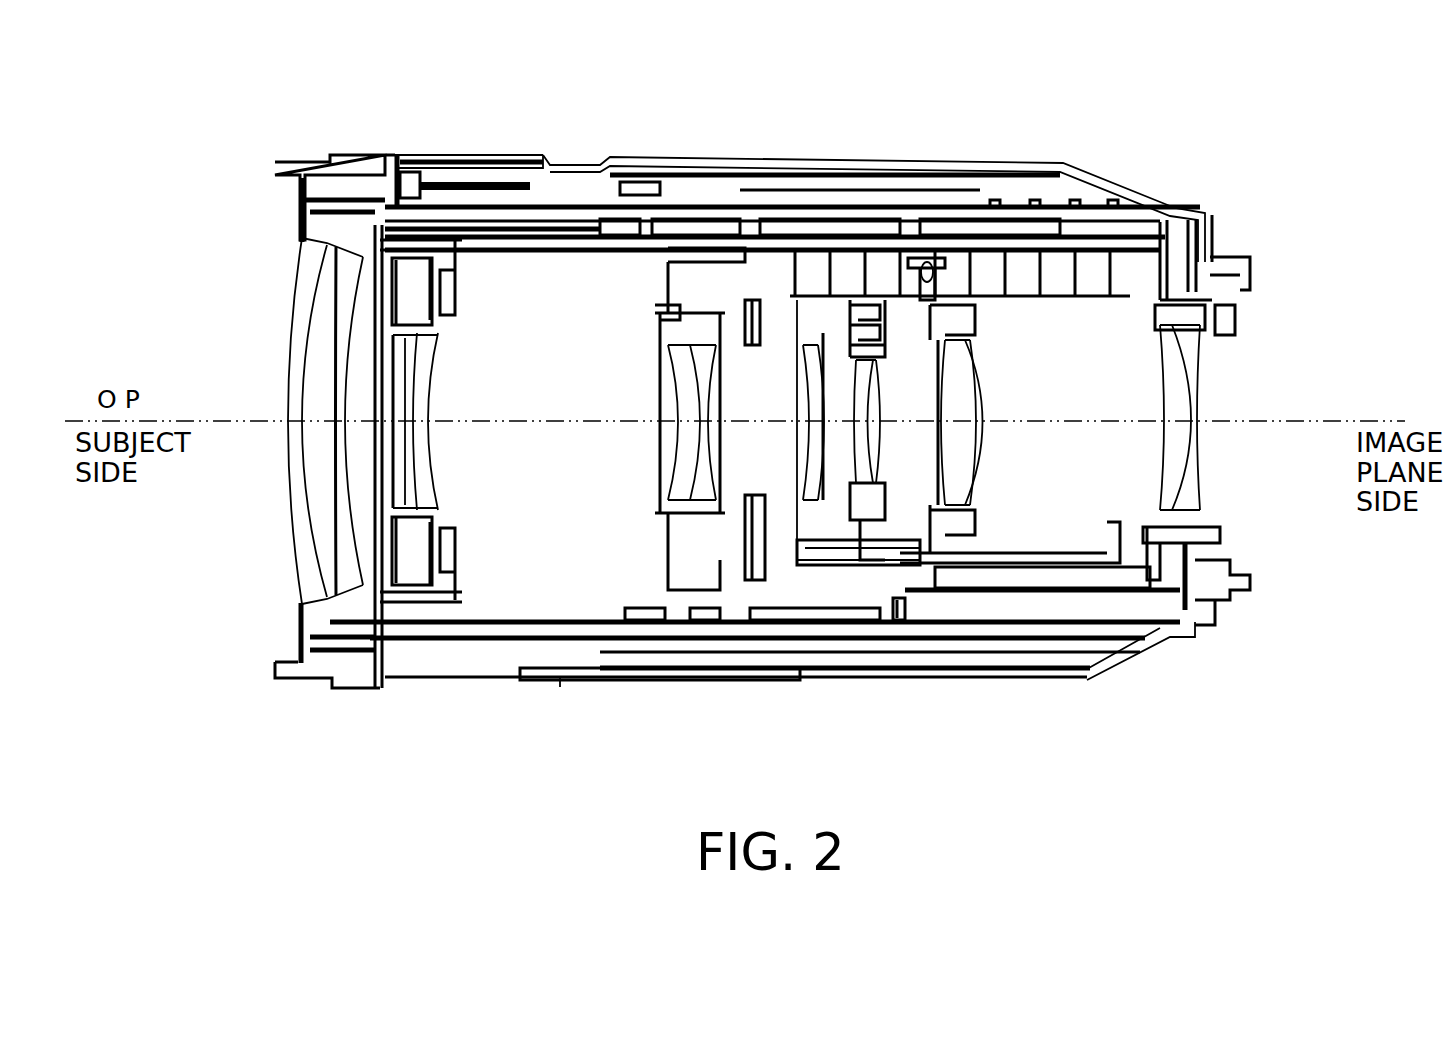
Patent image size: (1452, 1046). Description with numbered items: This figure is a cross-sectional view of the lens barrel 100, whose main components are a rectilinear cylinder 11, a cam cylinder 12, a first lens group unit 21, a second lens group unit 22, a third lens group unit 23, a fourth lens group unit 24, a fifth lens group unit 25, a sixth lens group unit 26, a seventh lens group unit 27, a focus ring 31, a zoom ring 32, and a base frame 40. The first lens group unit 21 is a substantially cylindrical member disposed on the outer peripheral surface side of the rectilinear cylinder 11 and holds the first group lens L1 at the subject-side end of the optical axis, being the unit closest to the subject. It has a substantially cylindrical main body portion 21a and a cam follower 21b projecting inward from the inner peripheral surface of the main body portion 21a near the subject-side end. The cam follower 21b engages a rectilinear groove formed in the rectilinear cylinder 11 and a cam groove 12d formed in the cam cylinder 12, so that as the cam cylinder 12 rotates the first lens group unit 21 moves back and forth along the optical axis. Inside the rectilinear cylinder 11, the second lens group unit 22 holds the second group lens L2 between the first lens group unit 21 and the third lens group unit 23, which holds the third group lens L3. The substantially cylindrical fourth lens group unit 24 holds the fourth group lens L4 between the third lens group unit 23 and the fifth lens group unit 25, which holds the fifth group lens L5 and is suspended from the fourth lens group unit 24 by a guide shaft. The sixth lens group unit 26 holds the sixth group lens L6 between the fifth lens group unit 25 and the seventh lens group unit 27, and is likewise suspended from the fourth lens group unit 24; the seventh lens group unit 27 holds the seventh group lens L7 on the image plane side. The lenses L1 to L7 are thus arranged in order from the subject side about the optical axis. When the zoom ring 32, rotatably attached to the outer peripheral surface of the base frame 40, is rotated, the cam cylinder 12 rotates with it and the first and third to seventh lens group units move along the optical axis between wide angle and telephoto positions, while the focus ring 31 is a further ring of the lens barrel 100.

The lens barrel 100 is at (268, 118).
The first lens group unit 21 is at (289, 196).
The focus ring 31 is at (463, 160).
The zoom ring 32 is at (685, 167).
The rectilinear cylinder 11 is at (596, 221).
The fourth lens group unit 24 is at (800, 285).
The cam cylinder 12 is at (920, 213).
The base frame 40 is at (1032, 193).
The seventh lens group unit 27 is at (1209, 298).
The first group lens L1 is at (282, 353).
The second group lens L2 is at (452, 472).
The second lens group unit 22 is at (420, 544).
The third group lens L3 is at (647, 391).
The third lens group unit 23 is at (658, 307).
The fourth group lens L4 is at (795, 471).
The fifth group lens L5 is at (841, 505).
The fifth lens group unit 25 is at (856, 496).
The cam follower 21b is at (891, 525).
The cam groove 12d is at (897, 632).
The main body portion 21a is at (598, 632).
The sixth group lens L6 is at (1005, 394).
The sixth lens group unit 26 is at (968, 530).
The seventh group lens L7 is at (1218, 446).